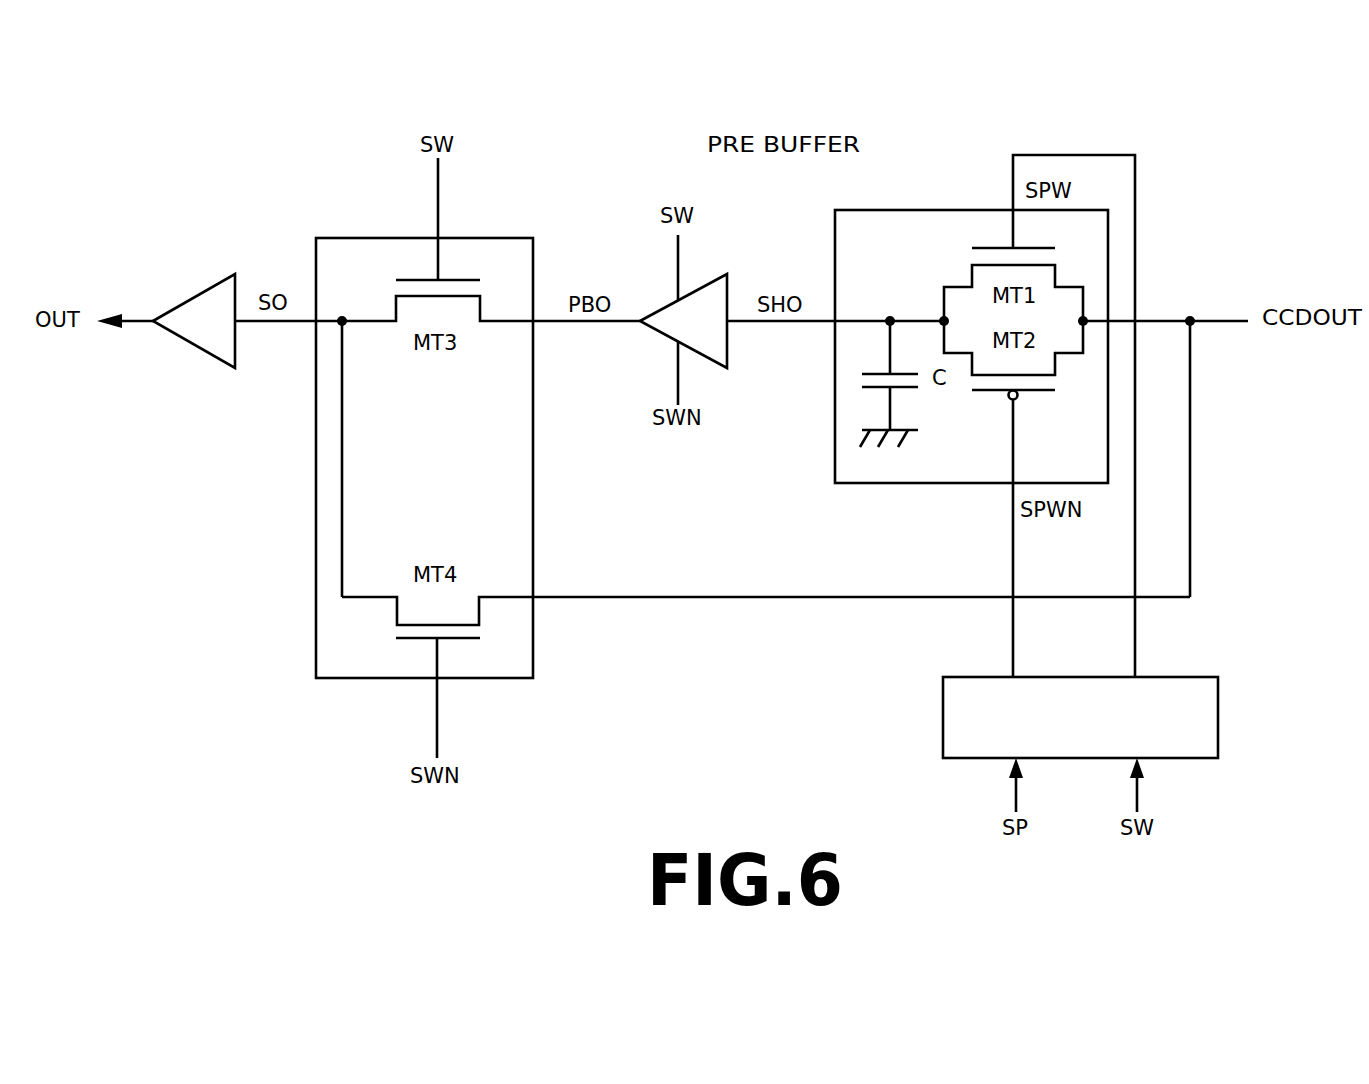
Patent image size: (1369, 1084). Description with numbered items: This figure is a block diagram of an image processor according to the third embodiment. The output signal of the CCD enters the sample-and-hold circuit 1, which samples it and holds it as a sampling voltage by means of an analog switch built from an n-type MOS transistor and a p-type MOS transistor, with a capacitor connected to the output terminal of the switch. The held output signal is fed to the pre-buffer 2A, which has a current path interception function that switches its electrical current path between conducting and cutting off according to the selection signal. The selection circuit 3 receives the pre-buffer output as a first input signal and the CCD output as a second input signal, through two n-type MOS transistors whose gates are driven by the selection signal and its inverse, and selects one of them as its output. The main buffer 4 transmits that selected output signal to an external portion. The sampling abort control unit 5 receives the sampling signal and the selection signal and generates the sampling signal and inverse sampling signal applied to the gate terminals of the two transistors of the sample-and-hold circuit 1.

The sample-and-hold circuit 1 is at (920, 210).
The pre-buffer 2A is at (700, 282).
The selection circuit 3 is at (500, 238).
The main buffer 4 is at (203, 288).
The sampling abort control unit 5 is at (1163, 676).